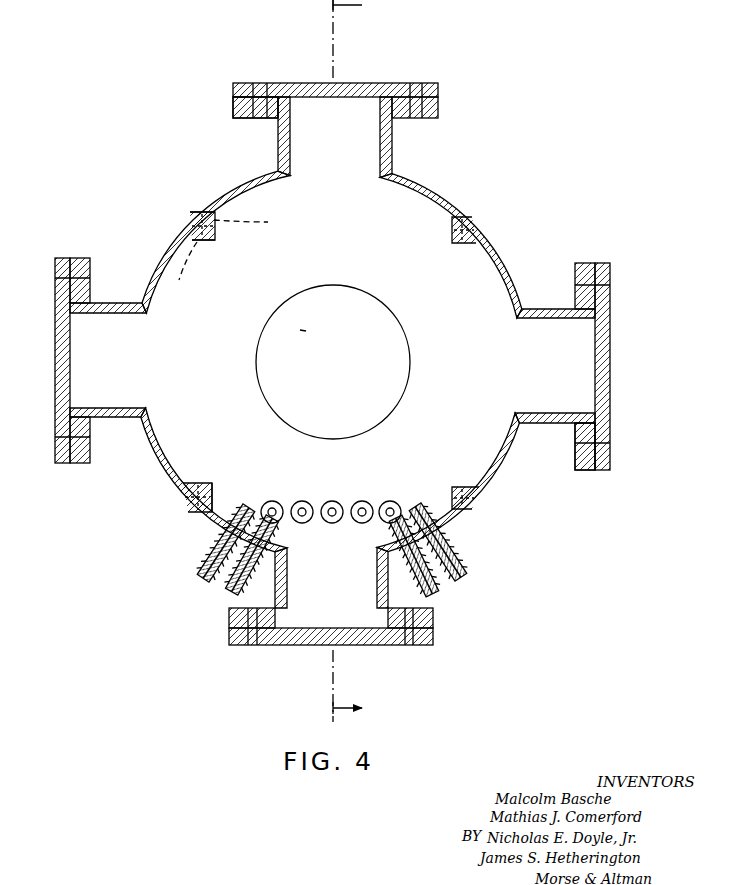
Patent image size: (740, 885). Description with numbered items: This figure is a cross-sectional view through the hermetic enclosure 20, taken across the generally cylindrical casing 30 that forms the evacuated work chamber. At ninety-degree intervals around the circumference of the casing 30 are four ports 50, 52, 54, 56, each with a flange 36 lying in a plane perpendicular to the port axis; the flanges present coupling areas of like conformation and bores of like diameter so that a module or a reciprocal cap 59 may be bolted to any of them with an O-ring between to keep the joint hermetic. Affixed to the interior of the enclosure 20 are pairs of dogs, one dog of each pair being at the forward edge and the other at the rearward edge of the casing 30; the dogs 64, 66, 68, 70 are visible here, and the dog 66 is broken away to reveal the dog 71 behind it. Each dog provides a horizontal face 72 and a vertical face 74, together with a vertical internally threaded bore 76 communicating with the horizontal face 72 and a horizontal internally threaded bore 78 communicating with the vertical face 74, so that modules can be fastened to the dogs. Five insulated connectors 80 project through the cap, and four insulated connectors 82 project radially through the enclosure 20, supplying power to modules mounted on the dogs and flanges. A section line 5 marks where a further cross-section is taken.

The section line 5- 5 is at (360, 361).
The hermetic enclosure 20 is at (470, 186).
The cylindrical casing 30 is at (501, 280).
The flange 36 is at (236, 104).
The port 50 is at (76, 257).
The port 52 is at (374, 81).
The port 54 is at (613, 302).
The port 56 is at (366, 646).
The reciprocal cap 59 is at (236, 87).
The dog 64 is at (220, 236).
The dog 66 is at (193, 478).
The dog 68 is at (450, 228).
The dog 70 is at (479, 482).
The dog 71 is at (214, 486).
The horizontal face 72 is at (214, 242).
The vertical face 74 is at (212, 213).
The vertical internally threaded bore 76 is at (178, 276).
The horizontal internally threaded bore 78 is at (253, 221).
The insulated connector 80 is at (390, 501).
The insulated connector 82 is at (228, 586).